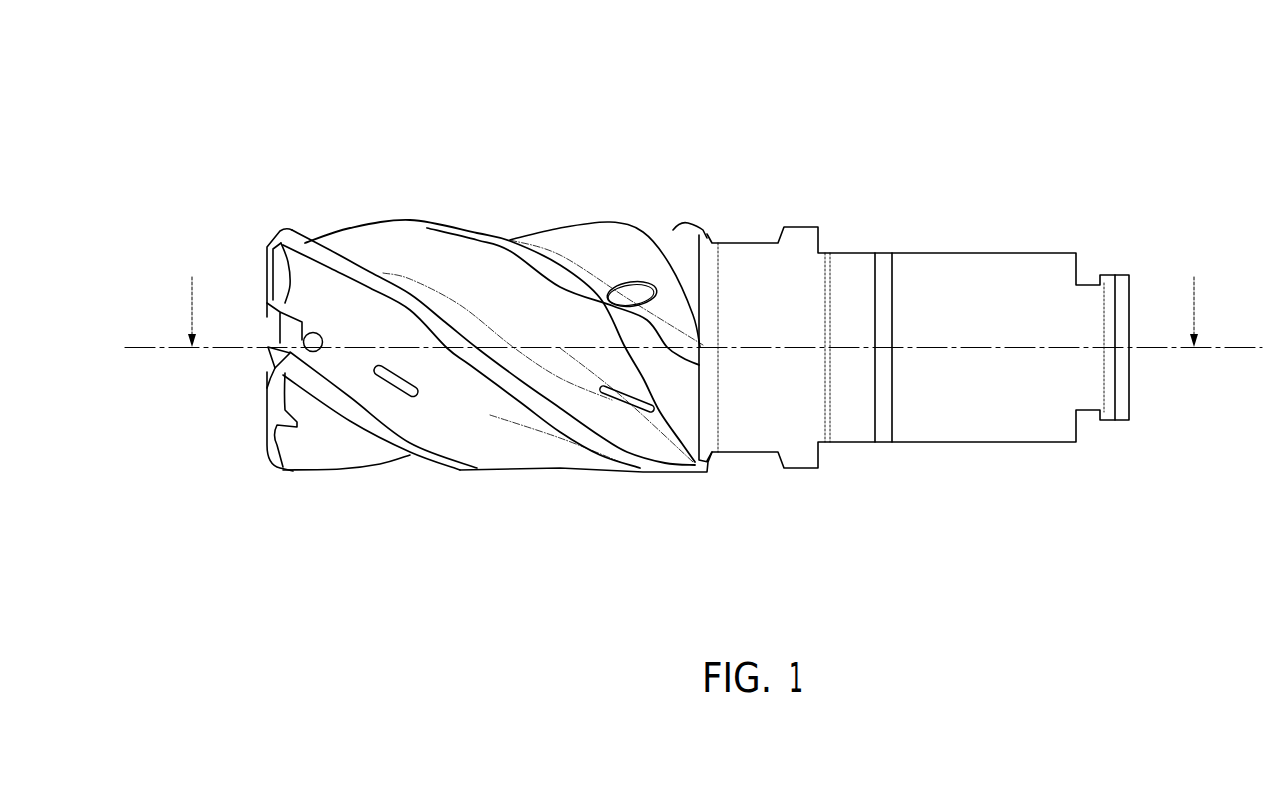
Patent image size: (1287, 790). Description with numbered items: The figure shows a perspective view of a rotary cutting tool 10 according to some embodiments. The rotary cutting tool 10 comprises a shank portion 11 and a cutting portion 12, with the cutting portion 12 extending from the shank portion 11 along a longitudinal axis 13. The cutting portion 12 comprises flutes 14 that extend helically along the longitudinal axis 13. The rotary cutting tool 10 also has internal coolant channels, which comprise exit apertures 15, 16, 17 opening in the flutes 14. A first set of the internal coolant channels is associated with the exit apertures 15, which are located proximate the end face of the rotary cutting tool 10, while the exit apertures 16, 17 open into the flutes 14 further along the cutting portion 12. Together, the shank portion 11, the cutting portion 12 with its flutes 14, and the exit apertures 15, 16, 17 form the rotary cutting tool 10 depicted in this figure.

The rotary cutting tool 10 is at (870, 101).
The shank portion 11 is at (1150, 505).
The cutting portion 12 is at (703, 128).
The longitudinal axis 13 is at (1247, 346).
The flutes 14 is at (520, 298).
The exit apertures 15 is at (313, 335).
The exit apertures 16 is at (410, 397).
The exit apertures 17 is at (632, 295).